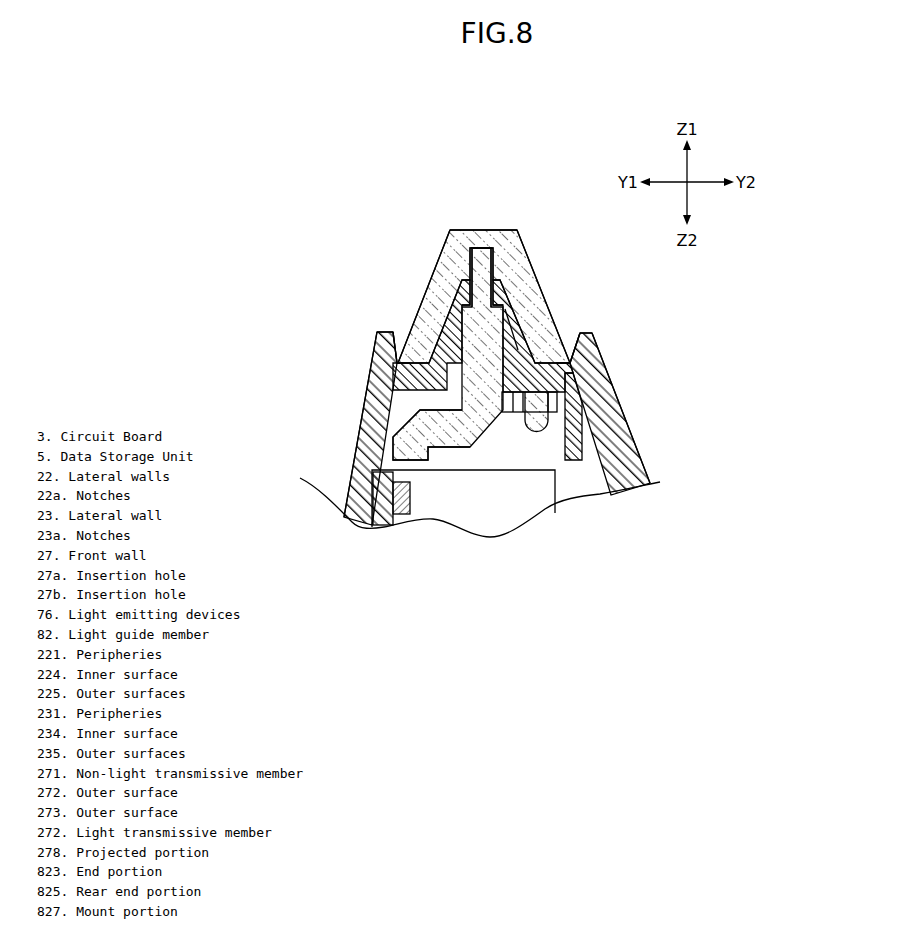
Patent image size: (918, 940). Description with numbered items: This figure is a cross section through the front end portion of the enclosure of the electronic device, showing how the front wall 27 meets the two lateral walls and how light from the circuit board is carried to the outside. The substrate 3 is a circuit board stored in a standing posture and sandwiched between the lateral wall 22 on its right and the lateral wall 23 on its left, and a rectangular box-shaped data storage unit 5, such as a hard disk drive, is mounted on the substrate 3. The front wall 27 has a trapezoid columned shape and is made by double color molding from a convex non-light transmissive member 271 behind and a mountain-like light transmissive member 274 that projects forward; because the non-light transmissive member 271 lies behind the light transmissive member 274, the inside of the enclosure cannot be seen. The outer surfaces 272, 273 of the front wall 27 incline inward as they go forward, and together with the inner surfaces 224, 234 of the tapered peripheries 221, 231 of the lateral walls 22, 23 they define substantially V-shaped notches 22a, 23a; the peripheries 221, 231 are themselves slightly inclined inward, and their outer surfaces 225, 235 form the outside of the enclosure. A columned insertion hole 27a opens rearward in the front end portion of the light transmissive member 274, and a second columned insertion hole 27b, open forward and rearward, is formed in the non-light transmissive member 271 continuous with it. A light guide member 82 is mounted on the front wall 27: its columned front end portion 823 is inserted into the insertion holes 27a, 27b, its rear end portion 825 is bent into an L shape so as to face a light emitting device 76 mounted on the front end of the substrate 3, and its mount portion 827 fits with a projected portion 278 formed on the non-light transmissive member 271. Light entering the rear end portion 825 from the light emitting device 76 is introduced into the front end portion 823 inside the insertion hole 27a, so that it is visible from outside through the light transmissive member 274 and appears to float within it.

The substrate 3 is at (381, 527).
The data storage unit 5 is at (540, 514).
The lateral wall 22 is at (343, 426).
The notch 22a is at (400, 324).
The lateral wall 23 is at (634, 435).
The notch 23a is at (568, 332).
The front wall 27 is at (525, 311).
The insertion hole 27a is at (497, 251).
The insertion hole 27b is at (510, 303).
The light emitting device 76 is at (409, 500).
The light guide member 82 is at (416, 376).
The periphery 221 is at (366, 350).
The inner surface 224 is at (394, 336).
The Outer surfaces 225 is at (377, 341).
The periphery 231 is at (590, 349).
The inner surface 234 is at (579, 334).
The Outer surfaces 235 is at (594, 336).
The non-light transmissive member 271 is at (463, 275).
The outer surface 272 is at (436, 263).
The outer surface 273 is at (531, 263).
The light transmissive member 274 is at (457, 255).
The projected portion 278 is at (574, 414).
The front end portion 823 is at (484, 256).
The rear end portion 825 is at (410, 444).
The mount portion 827 is at (512, 402).